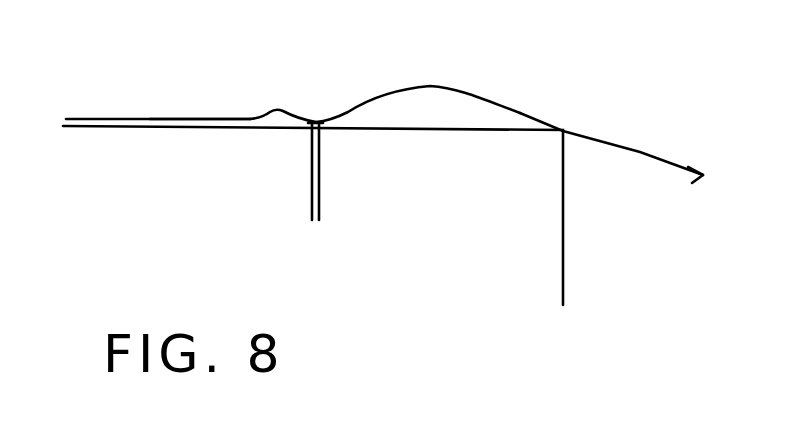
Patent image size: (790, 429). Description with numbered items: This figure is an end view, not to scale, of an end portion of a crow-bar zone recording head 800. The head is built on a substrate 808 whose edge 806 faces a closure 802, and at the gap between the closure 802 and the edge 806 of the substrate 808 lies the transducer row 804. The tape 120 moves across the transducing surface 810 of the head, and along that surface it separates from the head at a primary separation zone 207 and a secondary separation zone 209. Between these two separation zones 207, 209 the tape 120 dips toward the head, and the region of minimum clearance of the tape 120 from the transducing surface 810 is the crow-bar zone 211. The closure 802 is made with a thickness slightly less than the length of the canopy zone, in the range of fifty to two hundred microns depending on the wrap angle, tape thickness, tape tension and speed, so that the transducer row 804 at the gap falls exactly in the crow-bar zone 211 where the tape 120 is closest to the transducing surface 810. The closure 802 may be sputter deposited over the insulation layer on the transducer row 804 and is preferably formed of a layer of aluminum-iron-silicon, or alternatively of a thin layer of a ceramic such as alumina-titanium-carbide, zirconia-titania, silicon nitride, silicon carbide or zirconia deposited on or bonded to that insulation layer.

The crow-bar zone head 800 is at (496, 333).
The closure 802 is at (564, 222).
The transducer row 804 is at (323, 158).
The edge of the substrate 806 is at (310, 188).
The substrate 808 is at (112, 130).
The transducing surface 810 is at (178, 123).
The secondary separation zone 209 is at (276, 105).
The crow-bar zone 211 is at (317, 120).
The primary separation zone 207 is at (437, 80).
The tape 120 is at (640, 152).